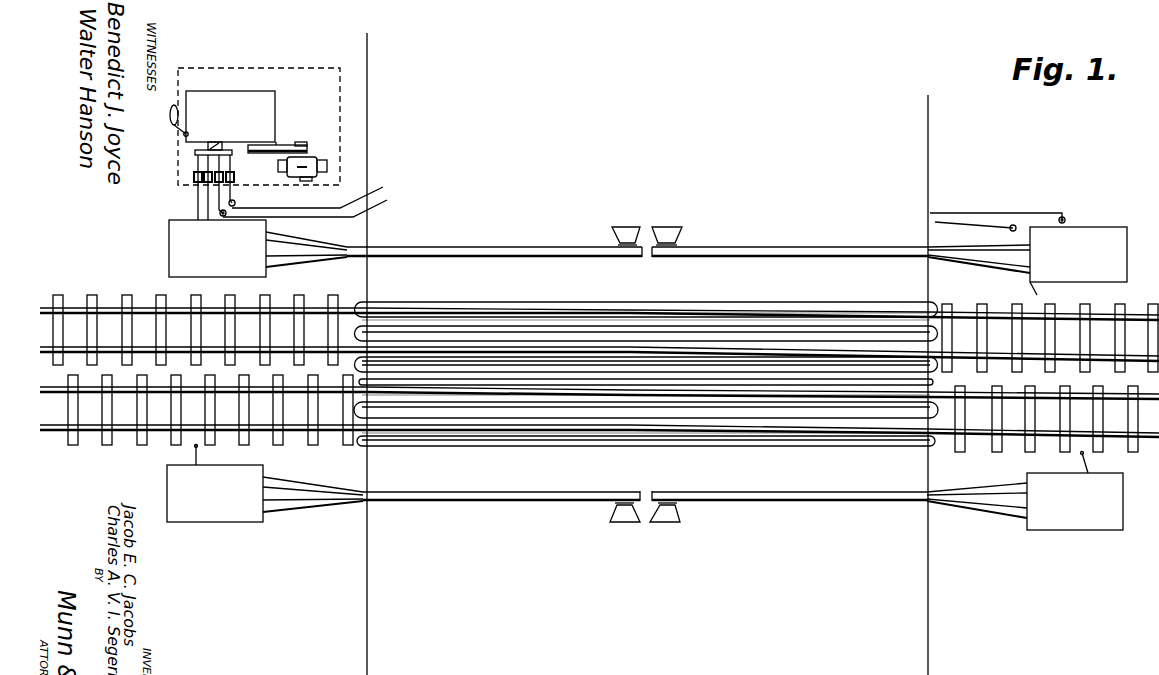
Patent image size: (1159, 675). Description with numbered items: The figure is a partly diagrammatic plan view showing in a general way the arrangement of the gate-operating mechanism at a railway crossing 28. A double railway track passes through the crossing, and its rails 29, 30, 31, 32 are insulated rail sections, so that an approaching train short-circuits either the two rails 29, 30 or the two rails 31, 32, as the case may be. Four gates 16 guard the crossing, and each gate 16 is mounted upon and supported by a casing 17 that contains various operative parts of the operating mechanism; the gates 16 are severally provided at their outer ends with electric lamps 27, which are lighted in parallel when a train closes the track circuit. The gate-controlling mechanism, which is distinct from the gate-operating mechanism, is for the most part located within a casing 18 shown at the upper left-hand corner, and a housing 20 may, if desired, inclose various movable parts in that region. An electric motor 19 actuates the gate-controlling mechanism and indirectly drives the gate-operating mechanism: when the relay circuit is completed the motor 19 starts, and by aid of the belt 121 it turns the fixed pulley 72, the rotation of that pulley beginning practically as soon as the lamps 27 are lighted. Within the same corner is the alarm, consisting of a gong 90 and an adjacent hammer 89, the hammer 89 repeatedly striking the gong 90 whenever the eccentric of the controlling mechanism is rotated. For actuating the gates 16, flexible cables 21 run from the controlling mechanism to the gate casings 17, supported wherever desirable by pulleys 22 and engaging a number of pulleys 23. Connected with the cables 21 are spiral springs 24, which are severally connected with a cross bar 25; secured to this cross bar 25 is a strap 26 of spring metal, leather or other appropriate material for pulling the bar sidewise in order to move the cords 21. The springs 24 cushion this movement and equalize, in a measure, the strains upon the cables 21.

The gate 16 is at (473, 250).
The casing 17 is at (647, 375).
The casing 18 is at (230, 116).
The electric motor 19 is at (308, 157).
The housing 20 is at (276, 66).
The flexible cables 21 is at (1130, 470).
The pulleys 22 is at (236, 203).
The pulleys 23 is at (236, 181).
The spiral springs 24 is at (231, 167).
The cross bar 25 is at (197, 153).
The strap 26 is at (195, 151).
The electric lamps 27 is at (622, 235).
The crossing 28 is at (732, 305).
The rail 29 is at (515, 312).
The rail 30 is at (562, 318).
The rail 31 is at (515, 395).
The rail 32 is at (572, 435).
The fixed pulley 72 is at (280, 144).
The hammer 89 is at (184, 134).
The gong 90 is at (172, 105).
The belt 121 is at (288, 145).